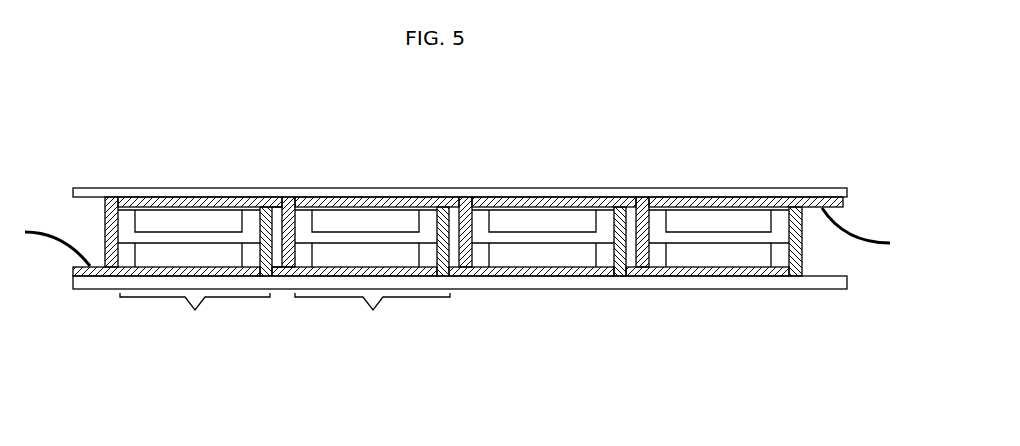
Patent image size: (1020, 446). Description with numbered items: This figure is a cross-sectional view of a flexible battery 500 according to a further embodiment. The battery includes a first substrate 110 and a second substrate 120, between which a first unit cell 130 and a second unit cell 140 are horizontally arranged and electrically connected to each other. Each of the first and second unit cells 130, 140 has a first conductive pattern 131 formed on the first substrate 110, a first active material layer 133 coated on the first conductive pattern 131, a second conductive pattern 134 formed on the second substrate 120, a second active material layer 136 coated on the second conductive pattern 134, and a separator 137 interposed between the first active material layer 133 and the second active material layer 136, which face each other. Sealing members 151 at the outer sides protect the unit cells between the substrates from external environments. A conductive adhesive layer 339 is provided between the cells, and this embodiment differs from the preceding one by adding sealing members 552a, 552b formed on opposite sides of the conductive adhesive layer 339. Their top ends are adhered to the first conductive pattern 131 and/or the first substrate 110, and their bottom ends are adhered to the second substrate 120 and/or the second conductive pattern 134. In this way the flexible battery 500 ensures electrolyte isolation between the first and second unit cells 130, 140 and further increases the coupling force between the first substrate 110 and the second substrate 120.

The flexible battery 500 is at (862, 140).
The first substrate 110 is at (847, 192).
The second substrate 120 is at (847, 283).
The sealing member 151 is at (105, 218).
The first conductive pattern 131 is at (127, 200).
The first active material layer 133 is at (178, 220).
The second conductive pattern 134 is at (148, 273).
The second active material layer 136 is at (208, 253).
The separator 137 is at (237, 237).
The conductive adhesive layer 339 is at (282, 220).
The sealing member 552a is at (264, 268).
The sealing member 552b is at (300, 272).
The first unit cell 130 is at (195, 315).
The second unit cell 140 is at (372, 315).